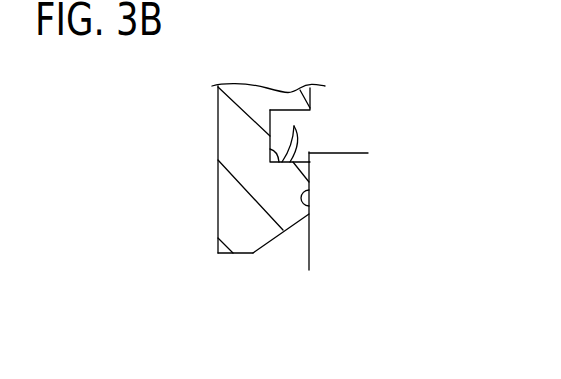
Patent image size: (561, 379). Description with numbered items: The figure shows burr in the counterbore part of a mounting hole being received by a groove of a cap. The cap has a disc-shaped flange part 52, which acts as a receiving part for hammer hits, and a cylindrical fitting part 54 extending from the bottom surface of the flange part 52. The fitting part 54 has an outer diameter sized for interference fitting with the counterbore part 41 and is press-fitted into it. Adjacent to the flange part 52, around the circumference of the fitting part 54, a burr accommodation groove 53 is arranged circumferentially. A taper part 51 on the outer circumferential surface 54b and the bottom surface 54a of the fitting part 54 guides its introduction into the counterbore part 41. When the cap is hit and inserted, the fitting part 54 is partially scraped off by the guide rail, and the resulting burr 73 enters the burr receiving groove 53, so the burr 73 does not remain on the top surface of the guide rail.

The counterbore part 41 is at (309, 205).
The taper part 51 is at (272, 239).
The flange part 52 is at (310, 108).
The burr accommodation groove 53 is at (270, 148).
The fitting part 54 is at (272, 205).
The bottom surface 54a is at (237, 254).
The outer circumferential surface 54b is at (310, 178).
The burr 73 is at (299, 142).